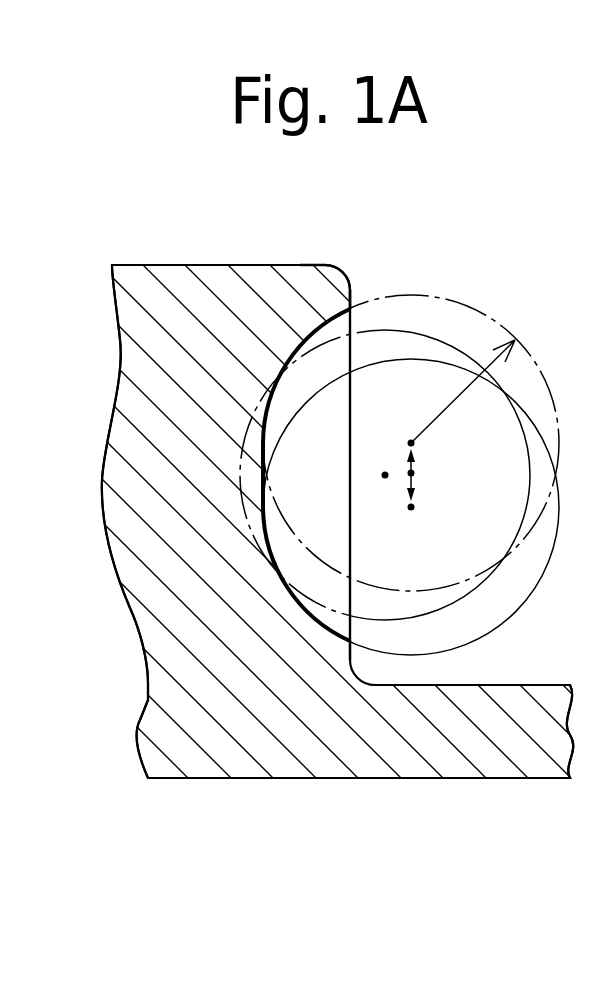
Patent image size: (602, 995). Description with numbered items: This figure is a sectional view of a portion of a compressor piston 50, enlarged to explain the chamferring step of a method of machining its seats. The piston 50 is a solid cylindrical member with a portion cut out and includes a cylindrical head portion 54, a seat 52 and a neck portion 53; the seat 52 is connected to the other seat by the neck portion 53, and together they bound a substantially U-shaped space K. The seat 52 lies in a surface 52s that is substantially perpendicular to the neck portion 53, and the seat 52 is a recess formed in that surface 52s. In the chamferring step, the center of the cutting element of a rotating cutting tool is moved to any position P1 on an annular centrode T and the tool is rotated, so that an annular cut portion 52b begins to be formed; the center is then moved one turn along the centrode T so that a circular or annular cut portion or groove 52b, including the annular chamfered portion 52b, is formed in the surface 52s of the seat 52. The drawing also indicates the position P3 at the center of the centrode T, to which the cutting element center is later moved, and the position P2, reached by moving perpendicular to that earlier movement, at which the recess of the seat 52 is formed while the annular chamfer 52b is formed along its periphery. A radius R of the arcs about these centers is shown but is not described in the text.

The compressor piston 50 is at (175, 778).
The seat 52 is at (297, 343).
The annular chamfered portion 52b is at (333, 320).
The surface of the seat 52s is at (351, 291).
The neck portion 53 is at (490, 757).
The head portion 54 is at (147, 683).
The position P1 is at (411, 443).
The position P2 is at (411, 507).
The position P3 is at (385, 475).
The arc radius R is at (463, 391).
The annular centrode T is at (413, 484).
The U-shaped space K is at (558, 677).